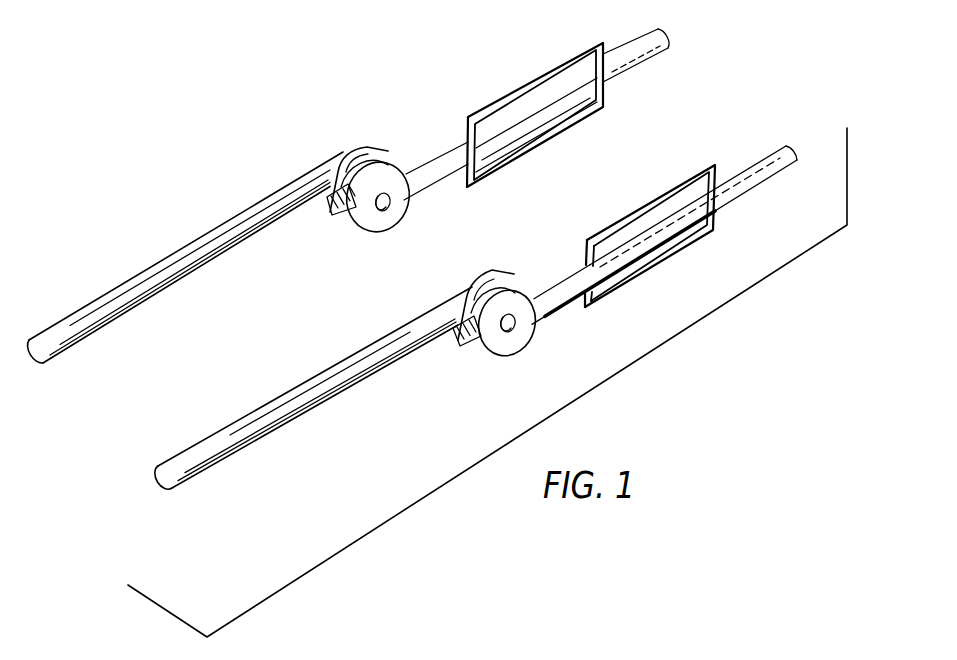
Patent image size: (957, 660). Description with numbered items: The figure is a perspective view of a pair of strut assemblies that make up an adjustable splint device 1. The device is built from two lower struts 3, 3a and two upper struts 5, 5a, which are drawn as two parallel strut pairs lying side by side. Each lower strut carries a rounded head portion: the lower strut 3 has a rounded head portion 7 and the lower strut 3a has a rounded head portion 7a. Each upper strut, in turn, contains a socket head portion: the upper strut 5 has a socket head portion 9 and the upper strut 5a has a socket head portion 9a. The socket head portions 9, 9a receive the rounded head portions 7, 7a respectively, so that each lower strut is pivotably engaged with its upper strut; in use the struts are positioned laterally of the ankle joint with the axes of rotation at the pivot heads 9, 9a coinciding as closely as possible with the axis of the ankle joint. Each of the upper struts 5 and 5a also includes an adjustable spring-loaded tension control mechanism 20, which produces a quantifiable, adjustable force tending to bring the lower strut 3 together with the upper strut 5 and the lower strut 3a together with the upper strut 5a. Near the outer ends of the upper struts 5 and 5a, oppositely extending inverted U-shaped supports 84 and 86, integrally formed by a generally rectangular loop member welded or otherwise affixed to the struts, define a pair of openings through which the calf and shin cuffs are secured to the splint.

The adjustable splint device 1 is at (289, 163).
The lower strut 3 is at (433, 322).
The lower strut 3a is at (221, 238).
The upper strut 5 is at (532, 343).
The upper strut 5a is at (450, 152).
The rounded head portion 7 is at (457, 340).
The rounded head portion 7a is at (329, 214).
The socket head portion 9 is at (512, 272).
The socket head portion 9a is at (388, 154).
The adjustable spring-loaded tension control mechanism 20 is at (437, 188).
The inverted U-shaped support 84 is at (612, 74).
The inverted U-shaped support 86 is at (589, 45).